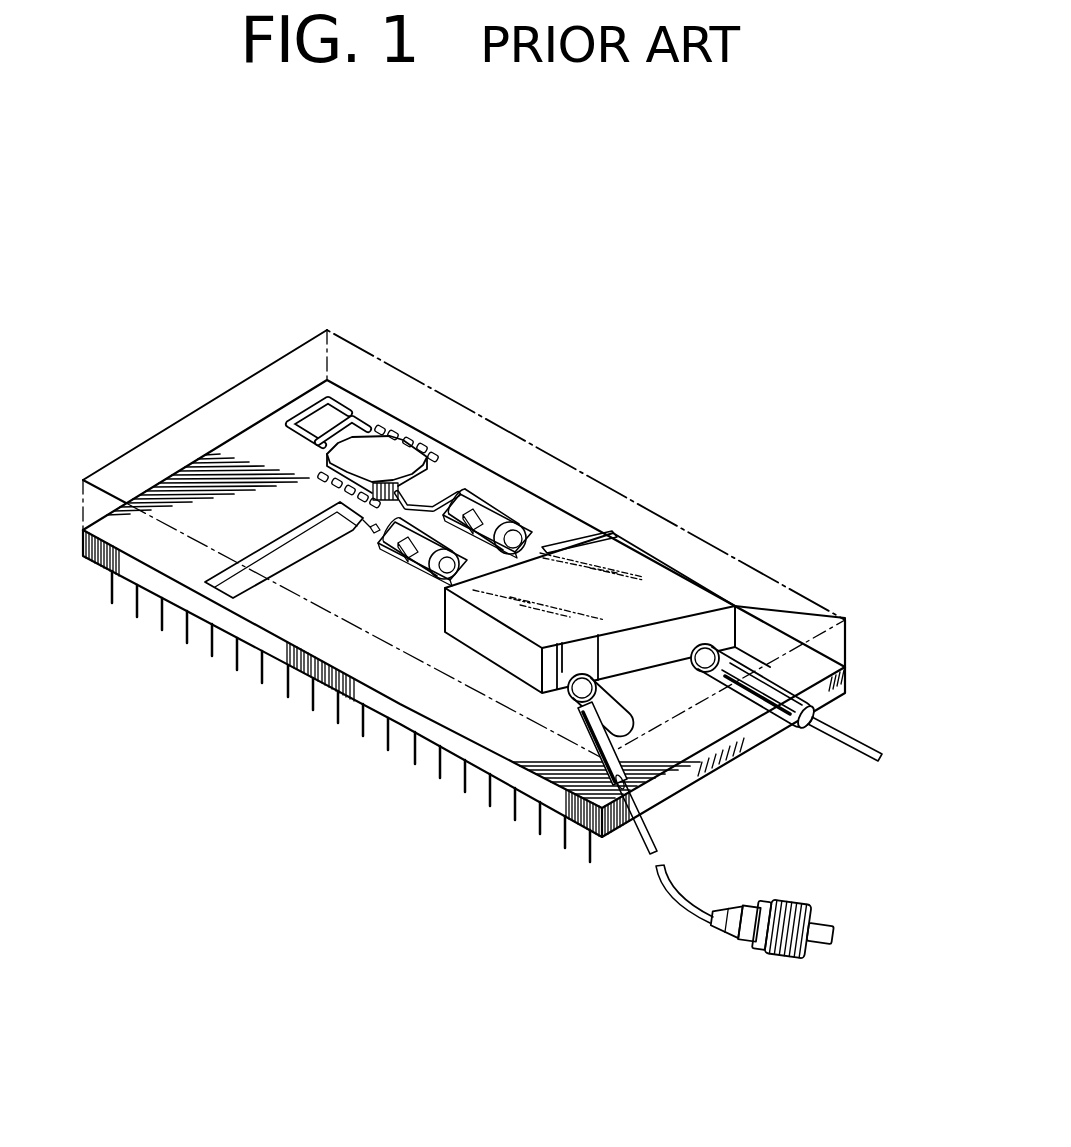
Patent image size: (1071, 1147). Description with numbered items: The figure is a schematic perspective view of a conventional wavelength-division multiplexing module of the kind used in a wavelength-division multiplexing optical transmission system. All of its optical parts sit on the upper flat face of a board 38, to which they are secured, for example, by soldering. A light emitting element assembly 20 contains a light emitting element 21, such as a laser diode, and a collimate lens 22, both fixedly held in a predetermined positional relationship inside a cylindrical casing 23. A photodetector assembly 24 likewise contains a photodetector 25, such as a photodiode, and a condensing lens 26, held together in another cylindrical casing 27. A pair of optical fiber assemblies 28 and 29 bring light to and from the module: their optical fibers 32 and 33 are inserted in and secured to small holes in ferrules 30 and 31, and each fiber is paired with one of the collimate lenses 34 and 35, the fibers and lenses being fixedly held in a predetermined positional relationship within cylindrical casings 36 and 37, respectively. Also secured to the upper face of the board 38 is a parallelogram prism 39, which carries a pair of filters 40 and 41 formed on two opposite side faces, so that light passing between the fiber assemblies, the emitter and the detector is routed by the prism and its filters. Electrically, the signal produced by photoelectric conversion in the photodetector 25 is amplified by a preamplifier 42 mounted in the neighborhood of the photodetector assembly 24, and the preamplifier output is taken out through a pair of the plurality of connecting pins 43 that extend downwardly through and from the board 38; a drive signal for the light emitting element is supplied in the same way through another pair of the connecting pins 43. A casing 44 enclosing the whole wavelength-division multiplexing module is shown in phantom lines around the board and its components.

The light emitting element assembly 20 is at (376, 579).
The light emitting element 21 is at (400, 566).
The collimate lens 22 is at (444, 580).
The cylindrical casing 23 is at (378, 550).
The photodetector assembly 24 is at (485, 488).
The photodetector 25 is at (500, 503).
The condensing lens 26 is at (533, 527).
The cylindrical casing 27 is at (502, 522).
The optical fiber assembly 28 is at (630, 750).
The optical fiber assembly 29 is at (795, 672).
The ferrule 30 is at (603, 790).
The ferrule 31 is at (790, 728).
The optical fiber 32 is at (663, 890).
The optical fiber 33 is at (857, 742).
The collimate lens 34 is at (575, 695).
The collimate lens 35 is at (707, 652).
The cylindrical casing 36 is at (598, 689).
The cylindrical casing 37 is at (790, 635).
The board 38 is at (137, 570).
The parallelogram prism 39 is at (655, 548).
The filter 40 is at (570, 530).
The filter 41 is at (582, 652).
The preamplifier 42 is at (371, 437).
The connecting pins 43 is at (212, 651).
The casing 44 is at (167, 430).